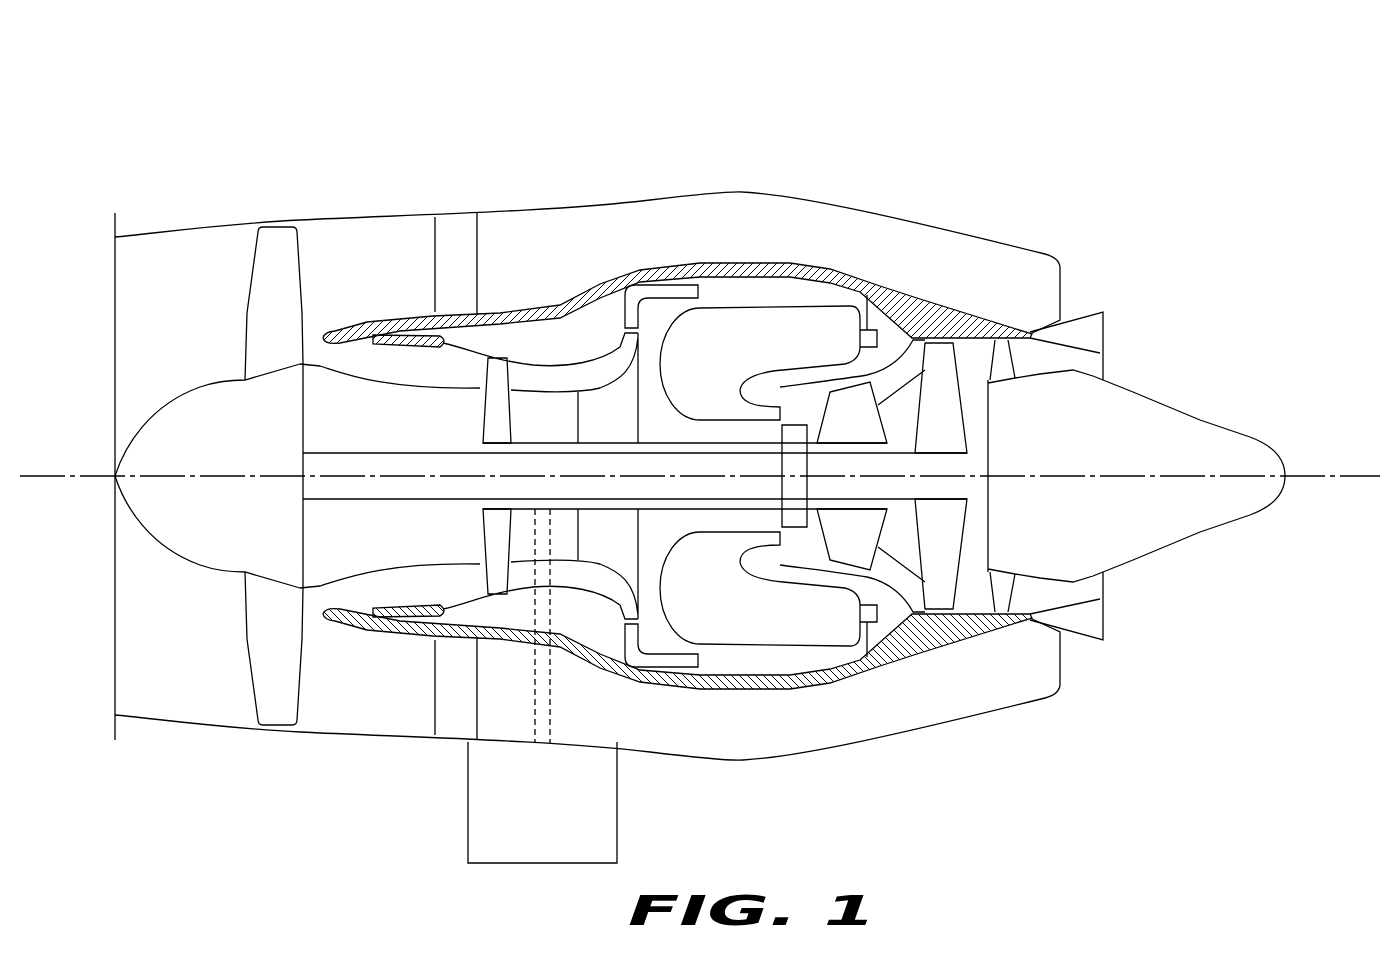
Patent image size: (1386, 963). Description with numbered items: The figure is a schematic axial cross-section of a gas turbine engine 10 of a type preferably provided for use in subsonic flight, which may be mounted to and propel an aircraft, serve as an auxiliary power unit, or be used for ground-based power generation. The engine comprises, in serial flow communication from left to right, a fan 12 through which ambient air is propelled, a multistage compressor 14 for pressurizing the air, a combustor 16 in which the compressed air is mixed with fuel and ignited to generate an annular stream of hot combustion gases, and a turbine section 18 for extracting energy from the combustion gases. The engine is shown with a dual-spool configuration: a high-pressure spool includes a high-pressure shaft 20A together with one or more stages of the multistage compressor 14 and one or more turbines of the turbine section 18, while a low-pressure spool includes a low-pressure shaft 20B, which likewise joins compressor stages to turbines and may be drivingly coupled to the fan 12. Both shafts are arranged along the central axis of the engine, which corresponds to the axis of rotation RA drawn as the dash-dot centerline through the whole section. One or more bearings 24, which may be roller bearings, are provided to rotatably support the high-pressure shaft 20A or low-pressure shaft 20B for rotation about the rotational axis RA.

The gas turbine engine 10 is at (927, 136).
The fan 12 is at (270, 640).
The multistage compressor 14 is at (560, 380).
The combustor 16 is at (760, 330).
The turbine section 18 is at (880, 545).
The high-pressure shaft 20A is at (538, 443).
The low-pressure shaft 20B is at (393, 453).
The bearings 24 is at (793, 423).
The axis of rotation RA is at (1330, 477).